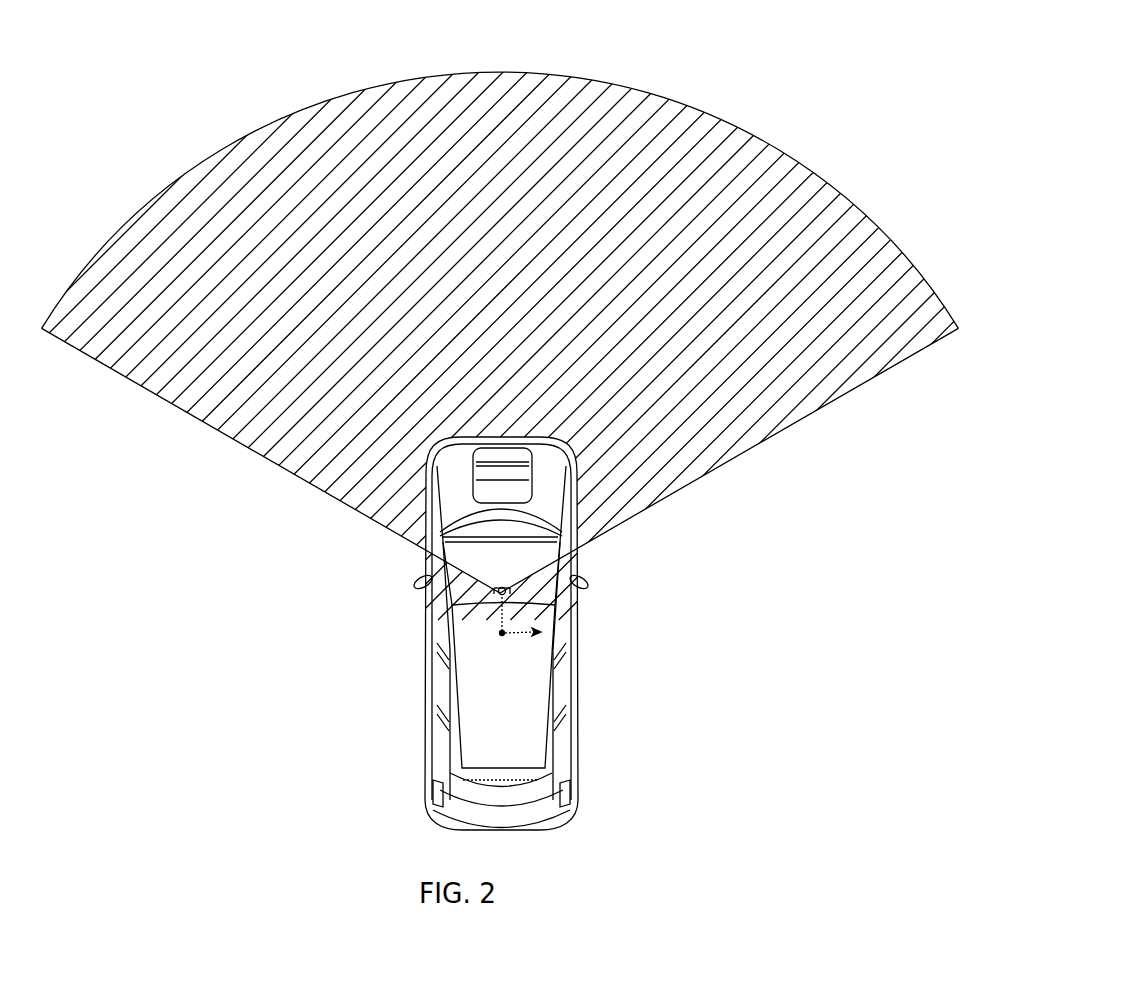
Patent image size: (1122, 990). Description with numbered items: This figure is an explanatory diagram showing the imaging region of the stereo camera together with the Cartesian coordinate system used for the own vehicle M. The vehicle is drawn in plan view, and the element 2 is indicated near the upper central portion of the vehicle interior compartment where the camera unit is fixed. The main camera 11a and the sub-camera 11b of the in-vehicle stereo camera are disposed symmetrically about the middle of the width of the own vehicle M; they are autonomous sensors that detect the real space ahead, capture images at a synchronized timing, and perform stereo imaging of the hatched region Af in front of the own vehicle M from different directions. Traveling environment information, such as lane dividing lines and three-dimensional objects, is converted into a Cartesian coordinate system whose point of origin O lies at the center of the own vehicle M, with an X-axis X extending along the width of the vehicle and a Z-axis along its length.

The region in front of the own vehicle Af is at (704, 108).
The own vehicle M is at (580, 662).
The sensor unit 2 is at (502, 594).
The main camera 11a is at (404, 605).
The sub-camera 11b is at (490, 594).
The point of origin O is at (494, 629).
The X-axis X is at (524, 645).